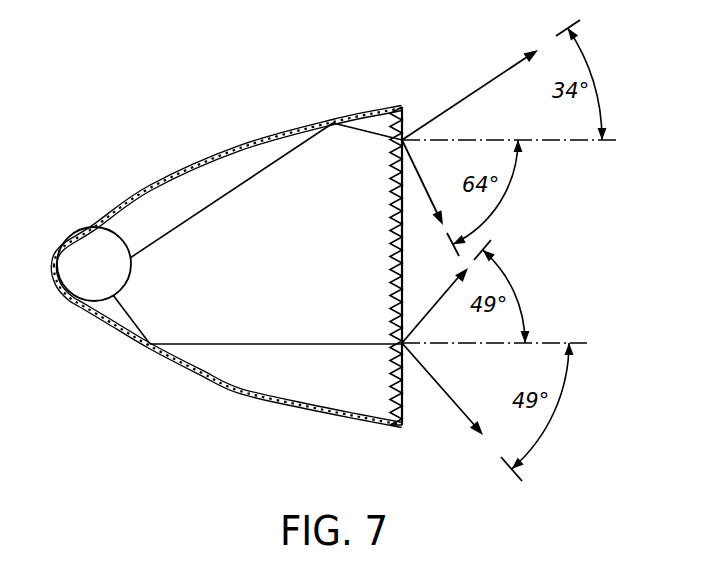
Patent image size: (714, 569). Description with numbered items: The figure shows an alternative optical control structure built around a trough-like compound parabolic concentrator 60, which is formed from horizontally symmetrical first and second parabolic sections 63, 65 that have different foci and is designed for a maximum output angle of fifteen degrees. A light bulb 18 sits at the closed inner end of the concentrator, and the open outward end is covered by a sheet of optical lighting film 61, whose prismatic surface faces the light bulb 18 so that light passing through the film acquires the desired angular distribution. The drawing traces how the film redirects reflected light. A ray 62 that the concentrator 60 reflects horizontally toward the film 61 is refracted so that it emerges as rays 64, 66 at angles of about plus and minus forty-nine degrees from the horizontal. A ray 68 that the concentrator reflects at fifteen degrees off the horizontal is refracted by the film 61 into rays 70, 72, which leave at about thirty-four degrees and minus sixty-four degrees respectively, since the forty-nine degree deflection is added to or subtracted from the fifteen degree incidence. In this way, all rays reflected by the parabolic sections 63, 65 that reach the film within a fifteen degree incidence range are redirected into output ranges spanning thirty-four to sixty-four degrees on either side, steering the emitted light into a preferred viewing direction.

The light bulb 18 is at (128, 281).
The compound parabolic concentrator 60 is at (244, 282).
The optical lighting film 61 is at (406, 404).
The horizontally reflected ray 62 is at (312, 343).
The first parabolic section 63 is at (207, 158).
The refracted ray 64 is at (433, 308).
The second parabolic section 65 is at (240, 392).
The refracted ray 66 is at (455, 403).
The ray reflected at fifteen degrees 68 is at (351, 128).
The refracted ray 70 is at (478, 86).
The refracted ray 72 is at (426, 188).